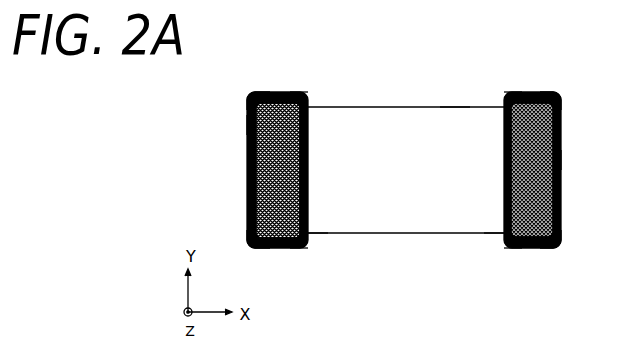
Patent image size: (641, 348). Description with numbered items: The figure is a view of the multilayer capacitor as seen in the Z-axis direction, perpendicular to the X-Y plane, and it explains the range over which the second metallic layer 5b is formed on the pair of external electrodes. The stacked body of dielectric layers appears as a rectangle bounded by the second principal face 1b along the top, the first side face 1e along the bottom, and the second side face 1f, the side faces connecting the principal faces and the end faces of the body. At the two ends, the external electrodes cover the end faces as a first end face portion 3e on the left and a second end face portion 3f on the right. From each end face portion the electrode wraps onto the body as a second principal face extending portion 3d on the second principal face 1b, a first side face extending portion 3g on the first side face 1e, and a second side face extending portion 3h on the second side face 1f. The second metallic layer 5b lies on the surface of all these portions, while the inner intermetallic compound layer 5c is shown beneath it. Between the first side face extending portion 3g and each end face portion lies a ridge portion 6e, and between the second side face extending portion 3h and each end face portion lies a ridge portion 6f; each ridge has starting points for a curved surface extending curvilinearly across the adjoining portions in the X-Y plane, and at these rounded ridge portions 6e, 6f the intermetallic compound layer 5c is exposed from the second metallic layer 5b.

The second principal face 1b is at (413, 118).
The first side face 1e is at (365, 234).
The second side face 1f is at (460, 106).
The second principal face extending portion 3d is at (318, 234).
The first end face portion 3e is at (248, 127).
The second end face portion 3f is at (567, 162).
The first side face extending portion 3g is at (306, 247).
The second side face extending portion 3h is at (298, 93).
The second metallic layer 5b is at (270, 93).
The intermetallic compound layer 5c is at (248, 212).
The ridge portion 6e is at (256, 247).
The ridge portion 6f is at (246, 99).